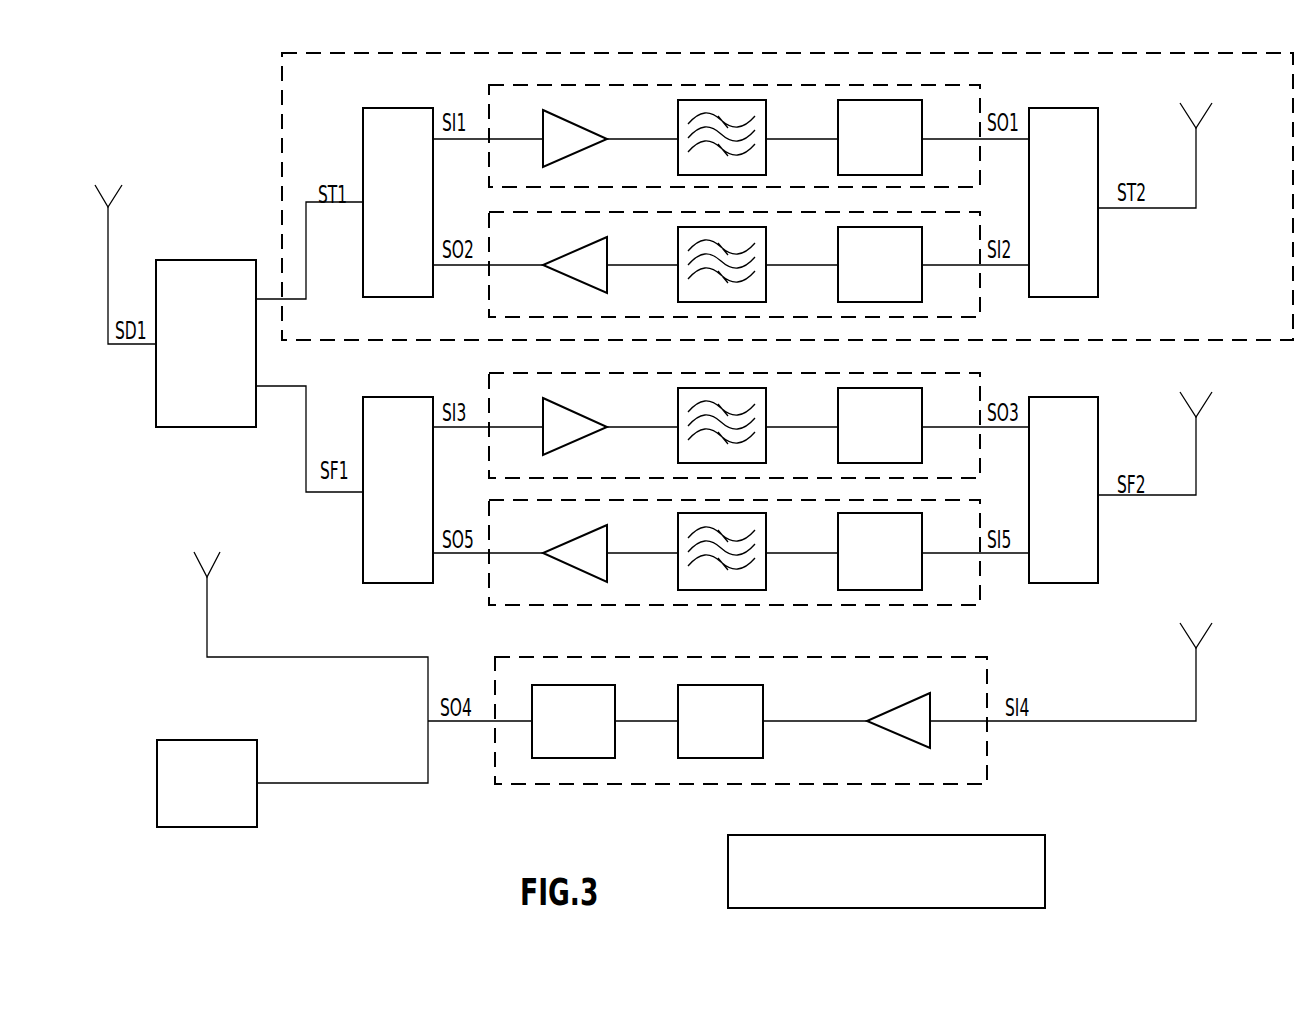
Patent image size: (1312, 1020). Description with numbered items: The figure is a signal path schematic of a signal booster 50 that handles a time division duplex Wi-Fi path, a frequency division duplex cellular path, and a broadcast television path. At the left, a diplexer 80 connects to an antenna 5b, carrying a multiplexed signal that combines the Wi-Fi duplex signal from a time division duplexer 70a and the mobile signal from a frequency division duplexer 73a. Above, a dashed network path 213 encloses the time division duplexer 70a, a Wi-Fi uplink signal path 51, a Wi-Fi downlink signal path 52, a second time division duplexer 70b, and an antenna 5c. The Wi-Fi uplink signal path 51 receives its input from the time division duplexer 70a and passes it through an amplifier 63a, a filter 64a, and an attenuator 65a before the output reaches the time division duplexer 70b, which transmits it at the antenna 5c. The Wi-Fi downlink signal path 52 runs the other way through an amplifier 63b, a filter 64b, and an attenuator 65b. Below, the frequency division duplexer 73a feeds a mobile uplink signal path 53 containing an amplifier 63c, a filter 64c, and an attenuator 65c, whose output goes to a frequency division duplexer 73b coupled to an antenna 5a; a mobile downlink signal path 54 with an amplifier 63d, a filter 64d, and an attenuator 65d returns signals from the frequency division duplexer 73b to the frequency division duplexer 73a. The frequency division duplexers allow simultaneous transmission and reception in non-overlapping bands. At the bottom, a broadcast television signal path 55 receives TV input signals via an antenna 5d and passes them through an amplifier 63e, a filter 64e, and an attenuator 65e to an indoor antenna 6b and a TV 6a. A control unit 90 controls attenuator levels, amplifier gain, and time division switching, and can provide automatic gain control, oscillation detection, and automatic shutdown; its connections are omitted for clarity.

The signal booster 50 is at (197, 137).
The network path 213 is at (282, 108).
The diplexer 80 is at (212, 260).
The antenna 5b is at (120, 192).
The antenna 5c is at (1203, 112).
The antenna 5a is at (1203, 402).
The antenna 5d is at (1203, 635).
The television 6a is at (182, 740).
The antenna 6b is at (200, 565).
The time division duplexer 70a is at (380, 108).
The time division duplexer 70b is at (1075, 108).
The frequency division duplexer 73a is at (395, 397).
The frequency division duplexer 73b is at (1075, 397).
The Wi-Fi uplink signal path 51 is at (980, 85).
The Wi-Fi downlink signal path 52 is at (980, 290).
The mobile uplink signal path 53 is at (980, 373).
The mobile downlink signal path 54 is at (875, 605).
The broadcast television signal path 55 is at (987, 672).
The amplifier 63a is at (580, 125).
The amplifier 63b is at (580, 250).
The amplifier 63c is at (580, 413).
The amplifier 63d is at (580, 538).
The amplifier 63e is at (900, 708).
The filter 64a is at (766, 103).
The filter 64b is at (766, 230).
The filter 64c is at (766, 392).
The filter 64d is at (766, 518).
The filter 64e is at (615, 692).
The attenuator 65a is at (838, 150).
The attenuator 65b is at (922, 250).
The attenuator 65c is at (838, 440).
The attenuator 65d is at (922, 538).
The attenuator 65e is at (763, 692).
The control unit 90 is at (1018, 835).